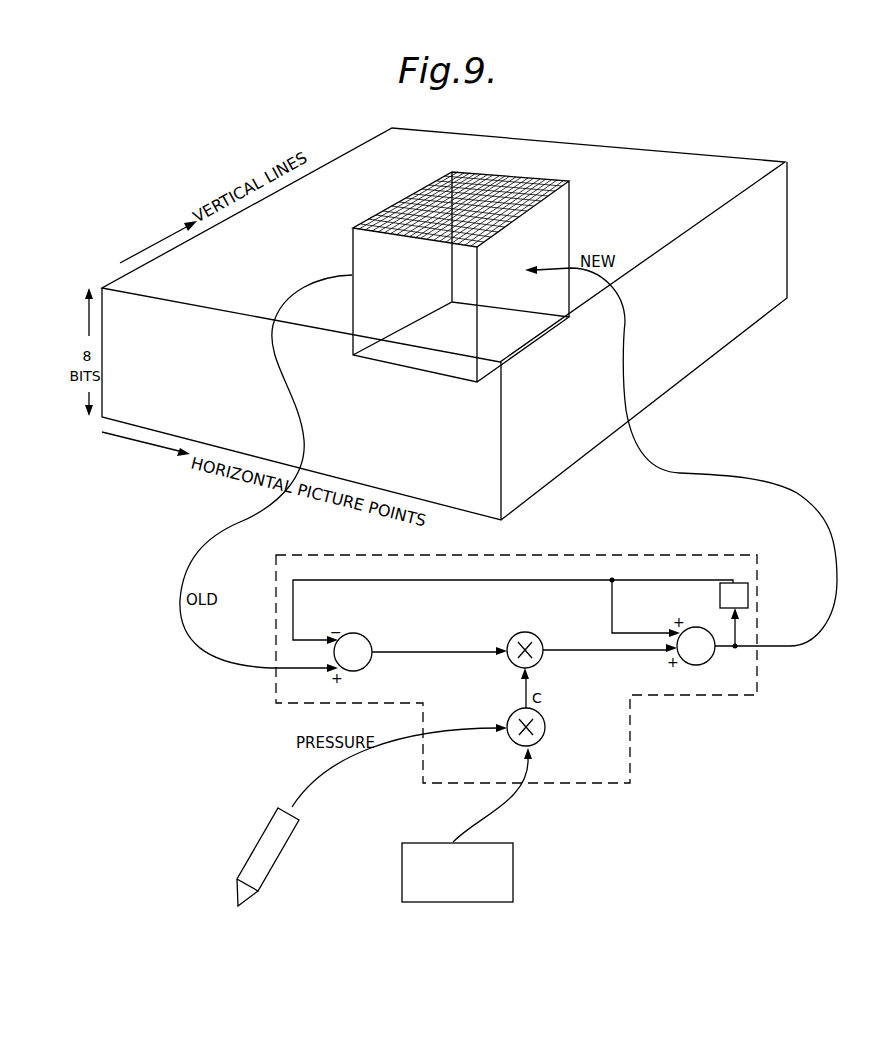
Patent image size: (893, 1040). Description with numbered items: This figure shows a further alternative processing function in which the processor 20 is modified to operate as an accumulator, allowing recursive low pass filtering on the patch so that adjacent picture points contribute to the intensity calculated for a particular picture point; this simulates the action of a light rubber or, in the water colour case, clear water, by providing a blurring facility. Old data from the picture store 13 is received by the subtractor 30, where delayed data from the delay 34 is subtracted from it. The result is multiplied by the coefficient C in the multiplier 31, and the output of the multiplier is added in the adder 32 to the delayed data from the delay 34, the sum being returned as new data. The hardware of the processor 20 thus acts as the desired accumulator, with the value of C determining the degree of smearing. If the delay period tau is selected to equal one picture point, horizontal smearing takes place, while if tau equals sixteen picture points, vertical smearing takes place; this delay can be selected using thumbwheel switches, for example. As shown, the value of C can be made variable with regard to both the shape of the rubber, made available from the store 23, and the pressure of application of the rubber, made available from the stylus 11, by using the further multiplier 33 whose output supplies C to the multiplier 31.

The stylus 11 is at (270, 853).
The picture memory block 13 is at (727, 320).
The processor 20 is at (757, 695).
The store 23 is at (513, 855).
The subtractor 30 is at (364, 645).
The multiplier 31 is at (538, 637).
The adder 32 is at (708, 661).
The further multiplier 33 is at (545, 731).
The delay 34 is at (718, 595).